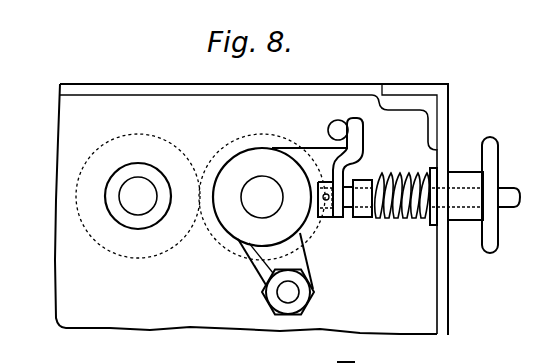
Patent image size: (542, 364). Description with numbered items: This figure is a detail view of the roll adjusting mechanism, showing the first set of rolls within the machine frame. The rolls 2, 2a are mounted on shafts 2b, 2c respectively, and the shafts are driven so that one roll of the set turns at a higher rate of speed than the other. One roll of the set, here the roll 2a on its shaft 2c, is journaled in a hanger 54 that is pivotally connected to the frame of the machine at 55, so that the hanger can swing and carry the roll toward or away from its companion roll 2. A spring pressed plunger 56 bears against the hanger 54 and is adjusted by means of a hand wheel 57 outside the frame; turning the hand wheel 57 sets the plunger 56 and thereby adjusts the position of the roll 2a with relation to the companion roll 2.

The roll 2 is at (135, 136).
The roll 2a is at (264, 130).
The shaft 2b is at (138, 196).
The shaft 2c is at (262, 197).
The hanger 54 is at (294, 152).
The pivotal connection 55 is at (314, 292).
The spring pressed plunger 56 is at (392, 181).
The hand wheel 57 is at (490, 172).